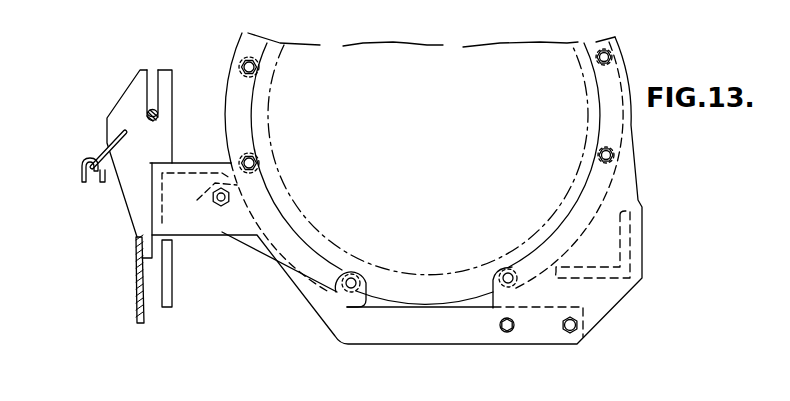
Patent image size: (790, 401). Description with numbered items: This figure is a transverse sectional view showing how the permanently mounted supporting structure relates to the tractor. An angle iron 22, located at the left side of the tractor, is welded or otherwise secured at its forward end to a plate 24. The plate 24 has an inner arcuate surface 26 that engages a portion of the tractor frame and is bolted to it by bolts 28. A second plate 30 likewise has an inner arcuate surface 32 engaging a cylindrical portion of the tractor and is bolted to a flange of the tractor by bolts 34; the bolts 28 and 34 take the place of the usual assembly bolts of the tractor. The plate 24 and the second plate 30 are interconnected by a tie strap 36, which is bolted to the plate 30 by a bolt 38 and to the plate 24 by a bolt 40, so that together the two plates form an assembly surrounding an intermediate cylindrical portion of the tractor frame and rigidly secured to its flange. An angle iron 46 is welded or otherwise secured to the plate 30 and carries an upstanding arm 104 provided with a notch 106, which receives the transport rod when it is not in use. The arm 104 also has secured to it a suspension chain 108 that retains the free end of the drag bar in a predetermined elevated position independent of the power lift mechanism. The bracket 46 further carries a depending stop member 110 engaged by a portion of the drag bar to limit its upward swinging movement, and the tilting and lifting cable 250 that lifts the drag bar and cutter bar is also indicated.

The angle iron 22 is at (633, 236).
The plate 24 is at (633, 173).
The inner arcuate surface 26 is at (600, 118).
The bolts 28 is at (597, 162).
The second plate 30 is at (227, 135).
The inner arcuate surface 32 is at (253, 124).
The bolts 34 is at (258, 164).
The tie strap 36 is at (428, 345).
The bolt 38 is at (220, 204).
The bolt 40 is at (507, 333).
The angle iron 46 is at (209, 173).
The upstanding arm 104 is at (117, 104).
The notch 106 is at (152, 77).
The suspension chain 108 is at (80, 182).
The stop member 110 is at (173, 296).
The tilting and lifting cable 250 is at (133, 302).